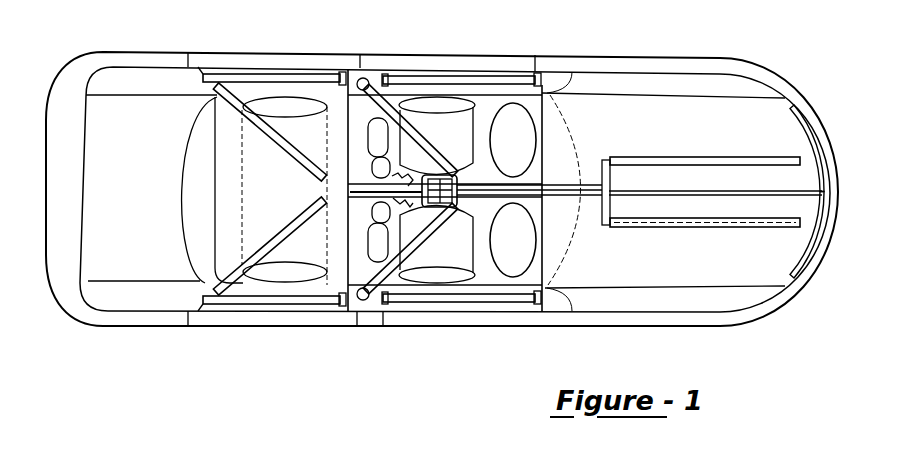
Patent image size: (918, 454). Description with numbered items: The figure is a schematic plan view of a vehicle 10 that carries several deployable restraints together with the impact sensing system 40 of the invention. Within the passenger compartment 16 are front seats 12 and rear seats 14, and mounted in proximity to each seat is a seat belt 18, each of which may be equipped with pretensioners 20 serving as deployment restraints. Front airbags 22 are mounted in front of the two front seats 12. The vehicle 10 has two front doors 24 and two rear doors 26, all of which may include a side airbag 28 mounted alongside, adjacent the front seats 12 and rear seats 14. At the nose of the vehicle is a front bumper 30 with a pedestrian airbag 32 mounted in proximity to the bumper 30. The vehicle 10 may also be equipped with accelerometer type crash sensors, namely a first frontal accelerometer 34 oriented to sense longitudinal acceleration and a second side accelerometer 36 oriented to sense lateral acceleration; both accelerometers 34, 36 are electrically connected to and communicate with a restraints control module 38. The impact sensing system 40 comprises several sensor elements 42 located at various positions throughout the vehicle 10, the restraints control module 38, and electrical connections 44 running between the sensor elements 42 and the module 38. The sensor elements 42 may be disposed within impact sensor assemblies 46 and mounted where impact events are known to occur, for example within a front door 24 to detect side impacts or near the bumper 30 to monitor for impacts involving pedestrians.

The vehicle 10 is at (781, 61).
The front seats 12 is at (502, 80).
The rear seats 14 is at (212, 181).
The passenger compartment 16 is at (351, 309).
The seat belt 18 is at (297, 217).
The pretensioners 20 is at (367, 298).
The front airbags 22 is at (543, 268).
The front doors 24 is at (466, 326).
The rear doors 26 is at (293, 52).
The side airbag 28 is at (440, 105).
The front bumper 30 is at (817, 127).
The pedestrian airbag 32 is at (823, 242).
The first frontal accelerometer 34 is at (450, 210).
The second side accelerometer 36 is at (410, 117).
The restraints control module 38 is at (405, 184).
The impact sensing system 40 is at (557, 151).
The sensor elements 42 is at (698, 158).
The electrical connections 44 is at (546, 107).
The impact sensor assemblies 46 is at (700, 228).